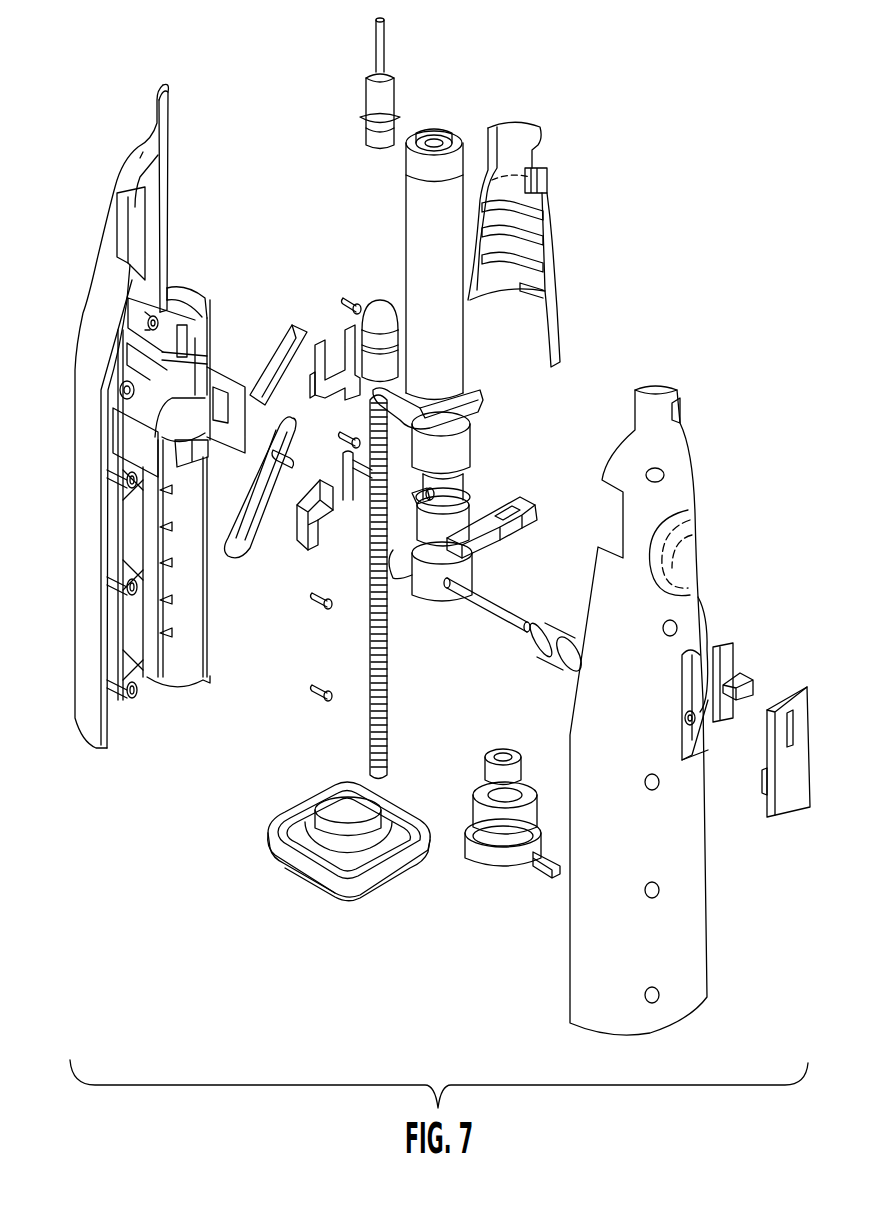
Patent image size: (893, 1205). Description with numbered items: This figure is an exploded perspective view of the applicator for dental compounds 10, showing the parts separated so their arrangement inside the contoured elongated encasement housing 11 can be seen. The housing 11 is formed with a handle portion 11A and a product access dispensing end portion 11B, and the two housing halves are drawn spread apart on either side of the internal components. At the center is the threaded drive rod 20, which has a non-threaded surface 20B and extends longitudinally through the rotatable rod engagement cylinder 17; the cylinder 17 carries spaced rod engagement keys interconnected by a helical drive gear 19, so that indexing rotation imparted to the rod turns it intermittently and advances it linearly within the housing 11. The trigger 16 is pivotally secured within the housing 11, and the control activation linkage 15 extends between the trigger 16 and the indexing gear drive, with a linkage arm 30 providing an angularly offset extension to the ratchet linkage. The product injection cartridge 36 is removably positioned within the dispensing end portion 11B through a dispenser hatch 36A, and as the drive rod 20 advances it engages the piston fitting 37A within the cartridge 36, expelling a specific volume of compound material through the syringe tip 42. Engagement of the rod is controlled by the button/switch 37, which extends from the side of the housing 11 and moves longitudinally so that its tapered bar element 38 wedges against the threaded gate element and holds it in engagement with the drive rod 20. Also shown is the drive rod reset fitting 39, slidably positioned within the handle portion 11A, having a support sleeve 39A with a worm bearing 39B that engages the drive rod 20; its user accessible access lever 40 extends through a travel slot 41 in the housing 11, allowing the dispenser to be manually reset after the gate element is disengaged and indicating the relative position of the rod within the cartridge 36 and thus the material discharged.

The applicator for dental compounds 10 is at (585, 158).
The encasement housing 11 is at (72, 423).
The handle portion 11A is at (70, 613).
The product access dispensing end portion 11B is at (690, 488).
The control activation linkage 15 is at (232, 565).
The trigger 16 is at (290, 340).
The rod engagement cylinder 17 is at (485, 456).
The helical drive gear 19 is at (462, 495).
The threaded drive rod 20 is at (385, 735).
The non-threaded surface 20B is at (370, 730).
The linkage arm 30 is at (252, 547).
The product injection cartridge 36 is at (405, 222).
The dispenser hatch 36A is at (555, 314).
The button/switch 37 is at (745, 680).
The piston fitting 37A is at (380, 310).
The tapered bar element 38 is at (520, 503).
The drive rod reset fitting 39 is at (464, 859).
The support sleeve 39A is at (500, 870).
The worm bearing 39B is at (540, 768).
The access lever 40 is at (535, 878).
The travel slot 41 is at (468, 395).
The syringe tip 42 is at (400, 98).